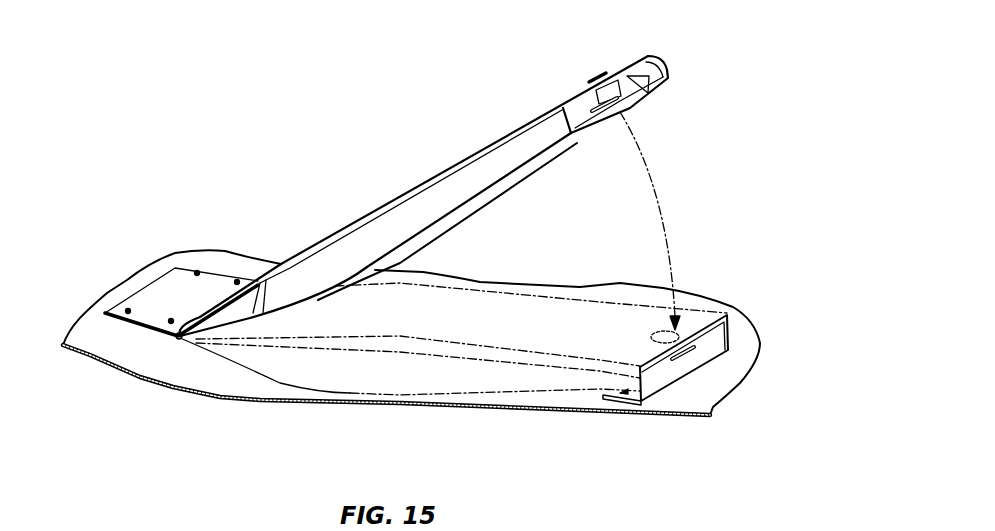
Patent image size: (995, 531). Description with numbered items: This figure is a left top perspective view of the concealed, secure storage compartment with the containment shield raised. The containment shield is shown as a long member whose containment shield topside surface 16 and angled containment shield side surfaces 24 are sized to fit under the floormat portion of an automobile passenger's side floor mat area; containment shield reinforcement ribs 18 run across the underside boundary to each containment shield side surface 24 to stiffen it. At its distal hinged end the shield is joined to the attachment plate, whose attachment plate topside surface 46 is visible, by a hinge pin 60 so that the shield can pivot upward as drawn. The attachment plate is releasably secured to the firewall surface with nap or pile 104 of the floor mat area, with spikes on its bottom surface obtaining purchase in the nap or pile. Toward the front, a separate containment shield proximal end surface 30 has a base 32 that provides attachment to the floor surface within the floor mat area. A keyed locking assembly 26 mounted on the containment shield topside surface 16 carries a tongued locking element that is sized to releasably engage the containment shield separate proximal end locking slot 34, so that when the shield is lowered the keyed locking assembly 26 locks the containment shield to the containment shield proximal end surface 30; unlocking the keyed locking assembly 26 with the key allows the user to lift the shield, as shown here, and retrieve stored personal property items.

The containment shield topside surface 16 is at (477, 153).
The containment shield reinforcement ribs 18 is at (643, 91).
The containment shield side surface 24 is at (510, 165).
The keyed locking assembly 26 is at (595, 82).
The containment shield proximal end surface 30 is at (663, 380).
The base 32 is at (623, 383).
The containment shield separate proximal end locking slot 34 is at (681, 353).
The attachment plate topside surface 46 is at (173, 297).
The hinge pin 60 is at (173, 340).
The firewall surface with nap or pile 104 is at (265, 393).